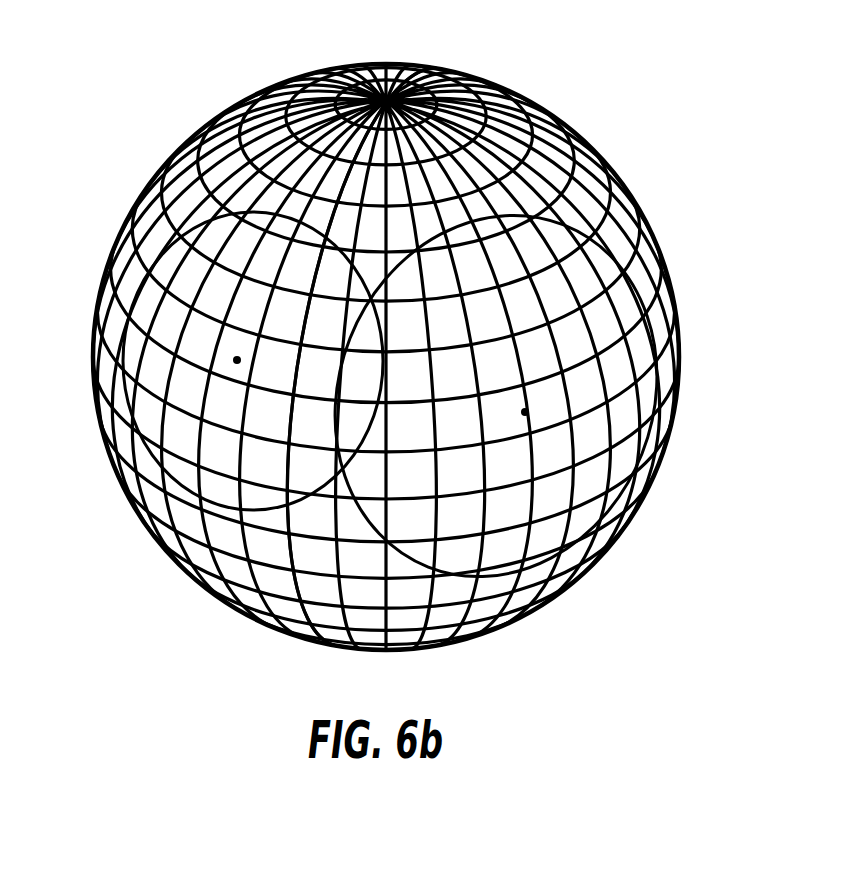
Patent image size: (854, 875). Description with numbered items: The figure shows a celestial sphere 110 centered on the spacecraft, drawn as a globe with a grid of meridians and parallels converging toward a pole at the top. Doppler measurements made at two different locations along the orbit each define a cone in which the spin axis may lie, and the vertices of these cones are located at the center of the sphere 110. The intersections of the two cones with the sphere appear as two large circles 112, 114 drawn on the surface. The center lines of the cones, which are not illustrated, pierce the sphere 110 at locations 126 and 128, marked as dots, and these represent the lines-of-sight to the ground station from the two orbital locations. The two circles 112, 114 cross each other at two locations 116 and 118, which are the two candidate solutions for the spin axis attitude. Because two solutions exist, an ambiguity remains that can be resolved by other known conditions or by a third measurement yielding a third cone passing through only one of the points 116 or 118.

The celestial sphere 110 is at (653, 239).
The cone intersection 112 is at (120, 479).
The cone intersection 114 is at (668, 437).
The intersection location 116 is at (292, 86).
The intersection location 118 is at (337, 470).
The line-of-sight location 126 is at (237, 360).
The line-of-sight location 128 is at (525, 412).